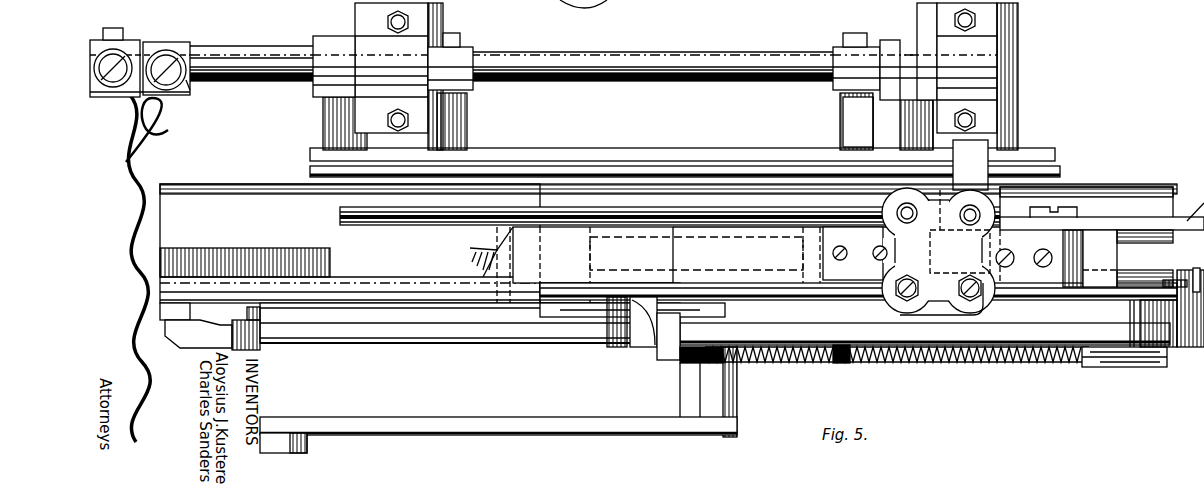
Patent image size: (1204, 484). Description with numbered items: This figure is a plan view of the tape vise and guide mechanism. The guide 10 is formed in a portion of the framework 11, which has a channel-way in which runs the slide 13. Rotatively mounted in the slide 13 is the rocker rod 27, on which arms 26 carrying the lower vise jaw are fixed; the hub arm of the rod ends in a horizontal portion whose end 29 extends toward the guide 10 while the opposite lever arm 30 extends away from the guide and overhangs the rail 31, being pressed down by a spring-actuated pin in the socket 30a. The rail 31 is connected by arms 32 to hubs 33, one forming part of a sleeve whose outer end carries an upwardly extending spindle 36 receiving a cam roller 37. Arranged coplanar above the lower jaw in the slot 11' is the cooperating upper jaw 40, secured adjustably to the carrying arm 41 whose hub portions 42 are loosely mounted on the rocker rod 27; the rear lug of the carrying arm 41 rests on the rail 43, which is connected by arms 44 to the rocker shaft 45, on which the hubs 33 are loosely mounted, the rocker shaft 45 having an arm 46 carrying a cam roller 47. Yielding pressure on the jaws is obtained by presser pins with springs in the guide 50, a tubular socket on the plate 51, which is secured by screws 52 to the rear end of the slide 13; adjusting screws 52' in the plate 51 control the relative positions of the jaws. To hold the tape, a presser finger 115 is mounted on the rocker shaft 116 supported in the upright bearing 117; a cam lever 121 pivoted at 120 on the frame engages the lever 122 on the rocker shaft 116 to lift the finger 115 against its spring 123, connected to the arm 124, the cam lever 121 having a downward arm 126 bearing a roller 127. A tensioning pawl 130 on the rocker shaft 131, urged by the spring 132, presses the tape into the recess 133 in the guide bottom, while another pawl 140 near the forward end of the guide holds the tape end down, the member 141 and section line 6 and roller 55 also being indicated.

The section line 6- 6 is at (293, 30).
The guide 10 is at (1130, 313).
The framework 11 is at (470, 365).
The slot 11' is at (564, 337).
The slide 13 is at (1187, 250).
The arms 26 is at (538, 267).
The rocker rod 27 is at (723, 258).
The lever arm end 29 is at (985, 304).
The lever arm 30 is at (977, 147).
The socket 30a is at (985, 216).
The rail 31 is at (677, 157).
The arms 32 is at (903, 125).
The hubs 33 is at (337, 63).
The spindle 36 is at (190, 84).
The cam roller 37 is at (185, 56).
The upper jaw 40 is at (430, 298).
The carrying arm 41 is at (530, 232).
The hub portions 42 is at (862, 175).
The rail 43 is at (433, 214).
The arms 44 is at (842, 108).
The rocker shaft 45 is at (733, 54).
The arm 46 is at (128, 43).
The cam roller 47 is at (107, 99).
The guide 50 is at (897, 221).
The plate 51 is at (896, 294).
The screws 52 is at (921, 302).
The adjusting screw 52' is at (1024, 249).
The bearing roller 55 is at (178, 100).
The presser finger 115 is at (1070, 364).
The rocker shaft 116 is at (1152, 350).
The upright bearing 117 is at (1152, 323).
The pivot 120 is at (723, 412).
The cam lever 121 is at (907, 362).
The lever 122 is at (1100, 366).
The actuating spring 123 is at (1003, 361).
The arm 124 is at (1117, 366).
The downwardly extending arm 126 is at (410, 424).
The roller 127 is at (285, 442).
The pawl 130 is at (625, 342).
The rocker shaft 131 is at (717, 312).
The spring 132 is at (797, 362).
The recess 133 is at (646, 342).
The pawl 140 is at (177, 320).
The nozzle end 141 is at (260, 345).